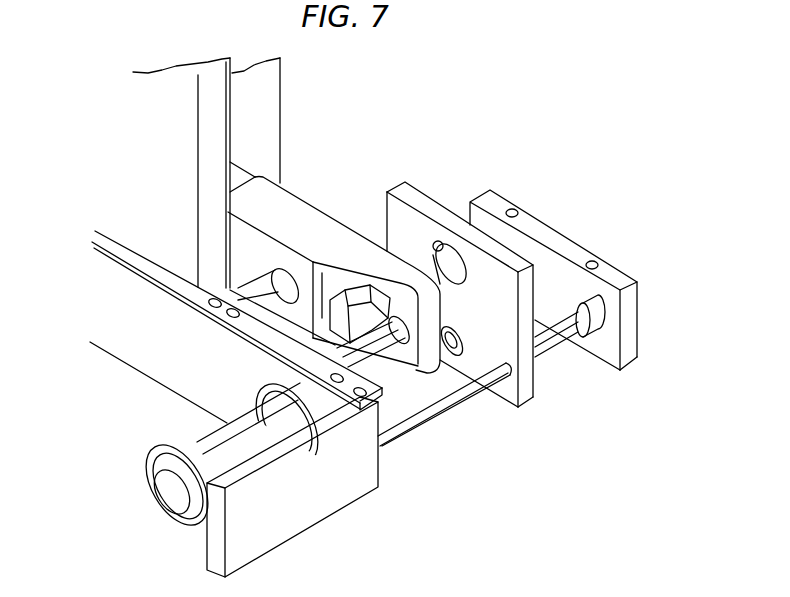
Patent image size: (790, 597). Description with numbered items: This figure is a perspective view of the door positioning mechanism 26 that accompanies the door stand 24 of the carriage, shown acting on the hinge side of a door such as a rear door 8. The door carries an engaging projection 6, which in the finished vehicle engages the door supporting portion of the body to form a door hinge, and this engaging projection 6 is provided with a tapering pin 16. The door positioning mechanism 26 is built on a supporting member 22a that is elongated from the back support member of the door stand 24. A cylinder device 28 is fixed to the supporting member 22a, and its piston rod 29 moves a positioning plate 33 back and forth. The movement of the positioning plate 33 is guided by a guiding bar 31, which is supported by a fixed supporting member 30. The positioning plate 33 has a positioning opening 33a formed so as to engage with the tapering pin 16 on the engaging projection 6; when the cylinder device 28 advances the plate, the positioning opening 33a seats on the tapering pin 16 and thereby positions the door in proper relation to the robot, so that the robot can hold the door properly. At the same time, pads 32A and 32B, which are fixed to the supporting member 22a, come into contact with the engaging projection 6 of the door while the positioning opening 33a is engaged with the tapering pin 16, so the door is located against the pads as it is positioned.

The rear door 8 is at (282, 142).
The engaging projection 6 is at (318, 223).
The tapering pin 16 is at (452, 285).
The supporting member 22a is at (175, 350).
The door stand 24 is at (160, 390).
The door positioning mechanism 26 is at (543, 415).
The cylinder device 28 is at (253, 427).
The piston rod 29 is at (393, 375).
The fixed supporting member 30 is at (553, 237).
The guiding bar 31 is at (550, 342).
The pad 32A is at (193, 293).
The pad 32B is at (320, 347).
The positioning plate 33 is at (413, 195).
The positioning opening 33a is at (442, 243).